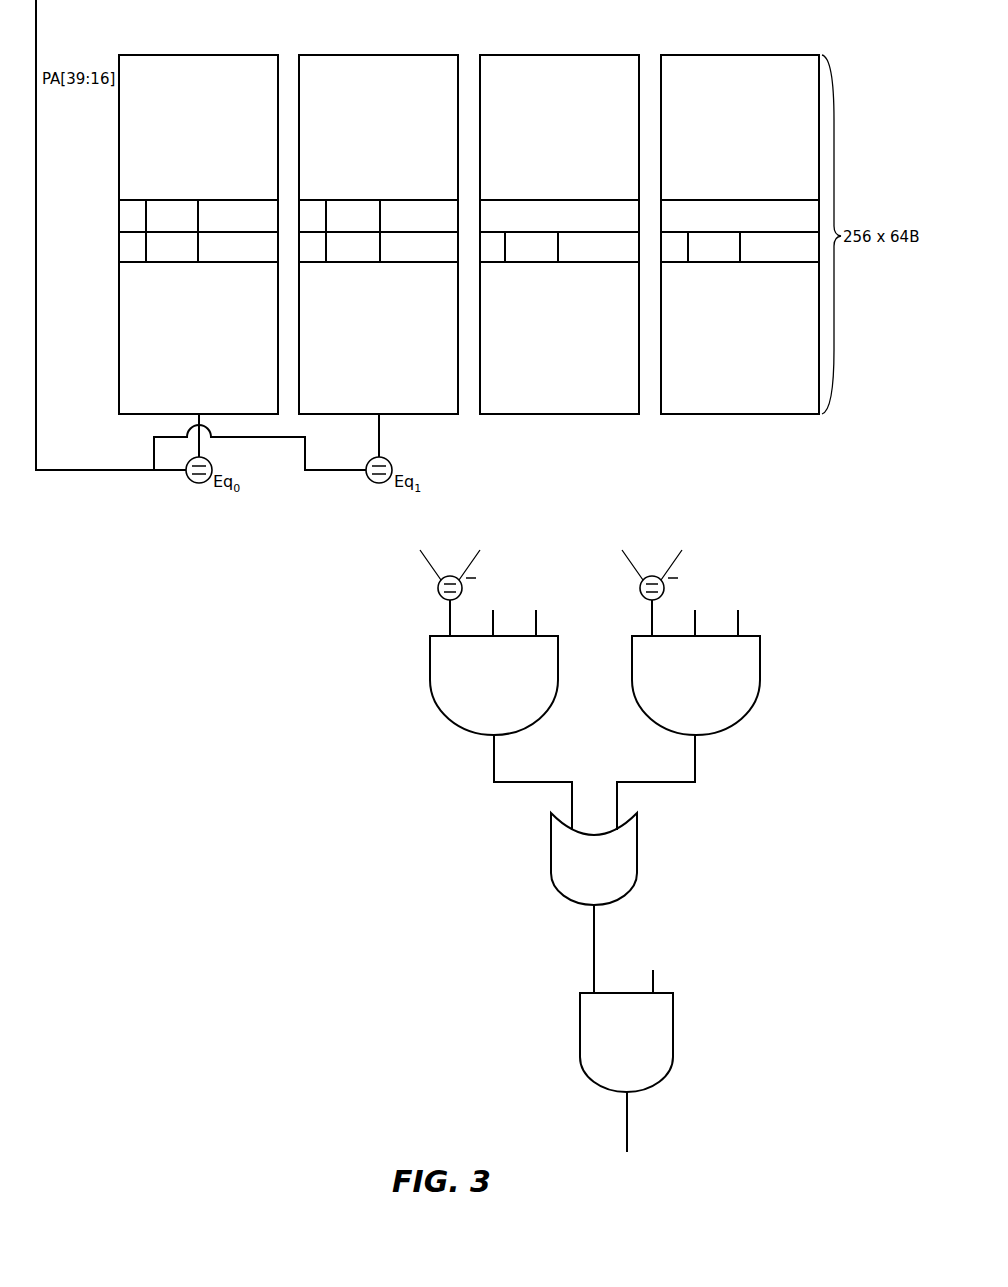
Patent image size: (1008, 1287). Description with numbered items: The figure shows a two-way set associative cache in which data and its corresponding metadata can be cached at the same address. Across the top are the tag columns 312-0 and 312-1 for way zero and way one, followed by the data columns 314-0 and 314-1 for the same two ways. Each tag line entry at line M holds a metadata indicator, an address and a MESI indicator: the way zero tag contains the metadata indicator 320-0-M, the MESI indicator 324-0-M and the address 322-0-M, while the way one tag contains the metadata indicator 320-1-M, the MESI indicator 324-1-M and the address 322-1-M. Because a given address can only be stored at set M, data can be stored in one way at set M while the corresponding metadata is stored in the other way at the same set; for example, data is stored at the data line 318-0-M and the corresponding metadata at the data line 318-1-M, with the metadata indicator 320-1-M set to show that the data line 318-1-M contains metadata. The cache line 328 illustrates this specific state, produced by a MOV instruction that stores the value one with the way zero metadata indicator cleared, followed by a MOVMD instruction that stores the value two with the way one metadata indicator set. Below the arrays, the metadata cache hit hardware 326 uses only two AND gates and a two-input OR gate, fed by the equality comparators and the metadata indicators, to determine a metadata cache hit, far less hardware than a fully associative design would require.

The tag column 312-0 is at (250, 54).
The tag column 312-1 is at (428, 54).
The data column 314-0 is at (608, 54).
The data column 314-1 is at (788, 54).
The metadata indicator 320-0-M is at (134, 199).
The metadata indicator 320-1-M is at (314, 199).
The MESI indicator 324-0-M is at (173, 199).
The MESI indicator 324-1-M is at (353, 199).
The address 322-0-M is at (236, 199).
The address 322-1-M is at (416, 199).
The data line 318-0-M is at (534, 199).
The data line 318-1-M is at (715, 199).
The cache line 328 is at (119, 248).
The metadata cache hit hardware 326 is at (462, 847).